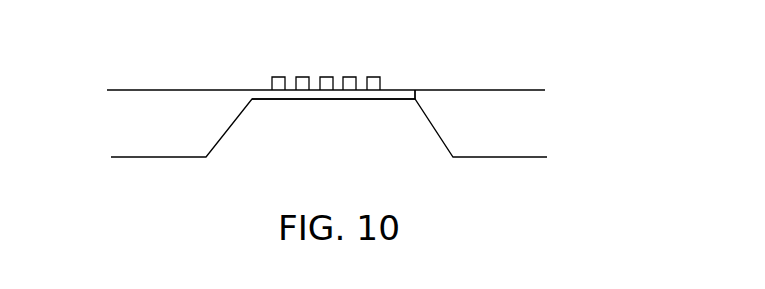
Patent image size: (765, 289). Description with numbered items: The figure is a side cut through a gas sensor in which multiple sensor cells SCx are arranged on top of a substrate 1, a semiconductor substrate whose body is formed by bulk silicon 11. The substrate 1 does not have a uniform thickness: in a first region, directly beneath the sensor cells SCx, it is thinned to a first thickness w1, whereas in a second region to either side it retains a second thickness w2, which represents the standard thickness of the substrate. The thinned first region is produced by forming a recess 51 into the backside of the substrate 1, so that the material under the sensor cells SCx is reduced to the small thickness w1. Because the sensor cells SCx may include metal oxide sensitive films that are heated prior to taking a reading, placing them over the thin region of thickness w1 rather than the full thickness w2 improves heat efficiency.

The substrate 1 is at (341, 100).
The bulk silicon 11 is at (535, 111).
The recess 51 is at (336, 133).
The sensor cells SCx is at (357, 77).
The first thickness w1 is at (415, 90).
The second thickness w2 is at (100, 123).